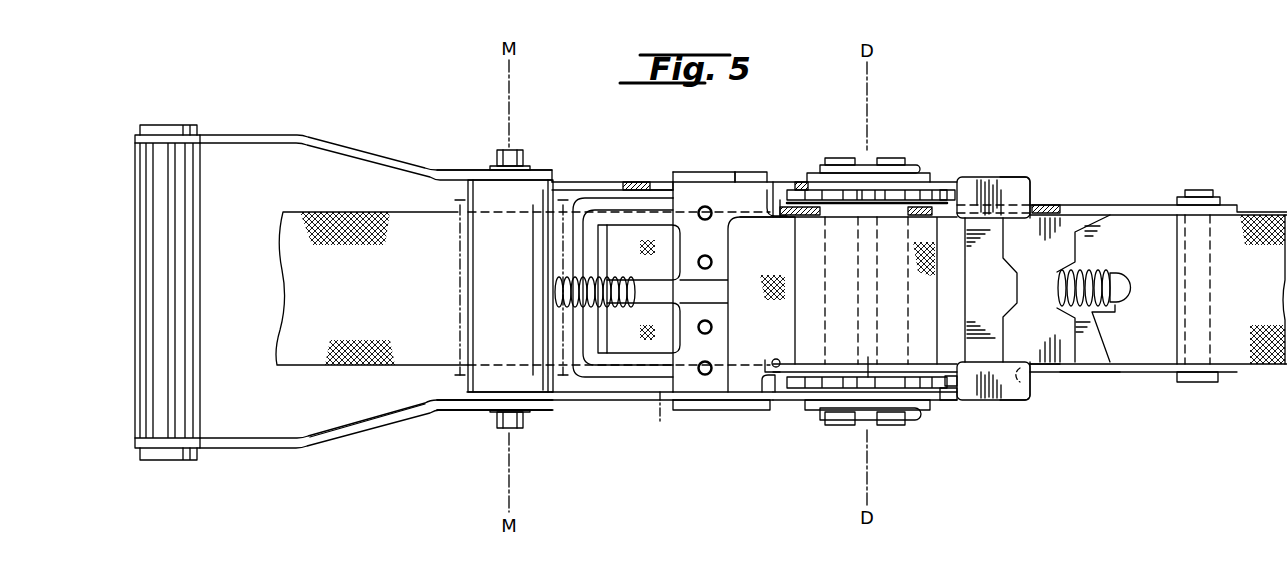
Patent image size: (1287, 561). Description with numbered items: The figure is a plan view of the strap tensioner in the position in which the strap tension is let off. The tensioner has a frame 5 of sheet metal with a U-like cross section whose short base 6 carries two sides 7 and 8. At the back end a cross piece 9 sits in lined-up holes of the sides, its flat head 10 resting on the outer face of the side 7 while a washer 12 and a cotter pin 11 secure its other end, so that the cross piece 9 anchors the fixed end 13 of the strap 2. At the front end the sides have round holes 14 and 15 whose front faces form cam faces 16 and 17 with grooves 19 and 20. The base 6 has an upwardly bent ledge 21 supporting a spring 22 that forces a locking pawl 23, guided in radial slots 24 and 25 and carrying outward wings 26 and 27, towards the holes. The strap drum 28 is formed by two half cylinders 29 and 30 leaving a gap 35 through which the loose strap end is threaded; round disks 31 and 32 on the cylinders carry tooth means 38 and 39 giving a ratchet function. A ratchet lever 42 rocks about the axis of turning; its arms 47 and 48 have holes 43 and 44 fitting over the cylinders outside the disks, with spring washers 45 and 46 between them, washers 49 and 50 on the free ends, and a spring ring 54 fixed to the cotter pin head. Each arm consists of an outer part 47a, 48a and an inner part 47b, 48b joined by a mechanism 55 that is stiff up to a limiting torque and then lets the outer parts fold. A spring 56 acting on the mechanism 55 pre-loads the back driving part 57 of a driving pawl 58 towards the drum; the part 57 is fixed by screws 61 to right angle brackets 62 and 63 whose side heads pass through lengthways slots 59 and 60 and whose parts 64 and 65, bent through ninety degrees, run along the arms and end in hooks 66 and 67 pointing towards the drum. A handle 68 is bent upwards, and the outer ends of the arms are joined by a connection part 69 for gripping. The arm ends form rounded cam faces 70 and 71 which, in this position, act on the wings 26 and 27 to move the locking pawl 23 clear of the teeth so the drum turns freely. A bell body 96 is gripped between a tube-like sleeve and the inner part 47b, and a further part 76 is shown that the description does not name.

The strap 2 is at (364, 298).
The frame 5 is at (1088, 373).
The base 6 is at (978, 298).
The side 7 is at (1130, 373).
The side 8 is at (1118, 205).
The cross piece 9 is at (1210, 305).
The flat head 10 is at (1210, 382).
The cotter pin 11 is at (1213, 190).
The washer 12 is at (1222, 199).
The fixed end of the strap 13 is at (1265, 365).
The round hole 14 is at (834, 210).
The round hole 15 is at (815, 362).
The cam face 16 is at (770, 392).
The cam face 17 is at (770, 188).
The groove 19 is at (777, 358).
The groove 20 is at (776, 204).
The ledge 21 is at (1112, 308).
The spring 22 is at (1080, 270).
The locking pawl 23 is at (1022, 277).
The slot 24 is at (1037, 388).
The slot 25 is at (1022, 207).
The wing 26 is at (1012, 395).
The wing 27 is at (1015, 177).
The strap drum 28 is at (853, 430).
The half cylinder 29 is at (831, 298).
The half cylinder 30 is at (882, 298).
The round disk 31 is at (935, 393).
The round disk 32 is at (935, 195).
The gap 35 is at (866, 357).
The tooth means 38 is at (946, 388).
The tooth means 39 is at (946, 198).
The ratchet lever 42 is at (425, 428).
The hole 43 is at (910, 412).
The hole 44 is at (900, 185).
The spring washer 45 is at (840, 390).
The spring washer 46 is at (858, 190).
The arm 47 is at (600, 408).
The outer part 47a is at (283, 448).
The inner part 47b is at (628, 402).
The arm 48 is at (597, 182).
The outer part 48a is at (283, 135).
The inner part 48b is at (634, 180).
The washer 49 is at (810, 410).
The washer 50 is at (815, 180).
The spring ring 54 is at (872, 418).
The mechanism 55 is at (492, 298).
The spring 56 is at (620, 276).
The back driving part 57 is at (642, 300).
The driving pawl 58 is at (713, 295).
The lengthways slot 59 is at (665, 419).
The lengthways slot 60 is at (664, 182).
The screws 61 is at (705, 361).
The right angle bracket 62 is at (722, 395).
The right angle bracket 63 is at (714, 195).
The bent part 64 is at (690, 412).
The bent part 65 is at (693, 172).
The hook 66 is at (743, 412).
The hook 67 is at (738, 172).
The handle 68 is at (586, 215).
The connection part 69 is at (196, 328).
The cam face 70 is at (960, 395).
The cam face 71 is at (962, 185).
The fastening nut 76 is at (497, 424).
The bell body 96 is at (457, 352).